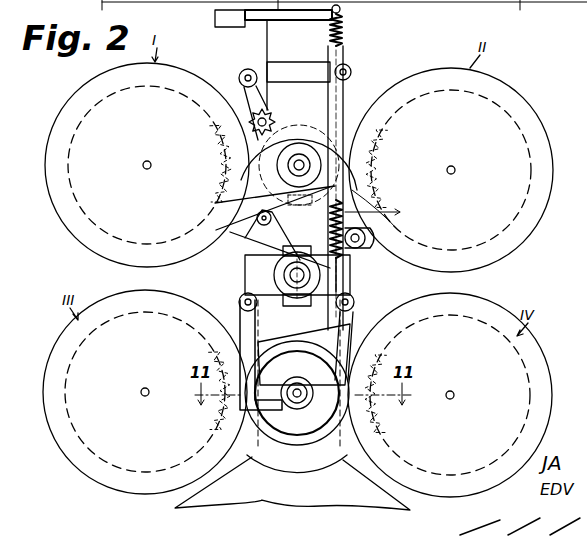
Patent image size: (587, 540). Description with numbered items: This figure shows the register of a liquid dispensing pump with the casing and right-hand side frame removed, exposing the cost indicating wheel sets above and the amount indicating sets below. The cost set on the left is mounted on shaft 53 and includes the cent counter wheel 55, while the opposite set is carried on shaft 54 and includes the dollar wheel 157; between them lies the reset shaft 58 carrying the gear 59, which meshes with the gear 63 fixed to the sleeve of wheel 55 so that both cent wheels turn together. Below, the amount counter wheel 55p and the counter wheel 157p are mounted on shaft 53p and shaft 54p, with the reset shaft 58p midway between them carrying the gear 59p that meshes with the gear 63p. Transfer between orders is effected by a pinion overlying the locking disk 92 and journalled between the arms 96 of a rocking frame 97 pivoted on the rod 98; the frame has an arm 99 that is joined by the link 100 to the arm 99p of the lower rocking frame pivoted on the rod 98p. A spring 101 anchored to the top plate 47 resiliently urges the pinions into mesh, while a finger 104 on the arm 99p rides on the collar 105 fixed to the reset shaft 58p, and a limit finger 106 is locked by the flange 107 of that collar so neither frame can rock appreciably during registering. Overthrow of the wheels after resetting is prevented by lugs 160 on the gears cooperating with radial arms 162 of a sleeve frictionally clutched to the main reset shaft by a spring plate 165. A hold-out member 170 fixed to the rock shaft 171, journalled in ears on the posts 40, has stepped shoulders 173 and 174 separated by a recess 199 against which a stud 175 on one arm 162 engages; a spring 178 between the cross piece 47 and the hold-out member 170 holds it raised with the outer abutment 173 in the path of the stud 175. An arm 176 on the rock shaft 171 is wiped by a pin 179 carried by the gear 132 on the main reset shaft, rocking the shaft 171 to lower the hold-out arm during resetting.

The top plate 47 is at (216, 22).
The post 40 is at (268, 32).
The arm 99 is at (300, 68).
The spring 178 is at (344, 28).
The link 100 is at (350, 80).
The rod 98 is at (244, 70).
The arms of rocking frame 96 is at (240, 90).
The locking disk 92 is at (276, 118).
The gear 59 is at (362, 118).
The counter wheel 55 is at (70, 103).
The shaft 53 is at (143, 165).
The gear 63 is at (212, 144).
The reset shaft 58 is at (300, 163).
The lug 160 is at (223, 168).
The shaft 54 is at (456, 168).
The counter wheel 157 is at (554, 167).
The recess 199 is at (225, 204).
The outer abutment 173 is at (230, 228).
The shoulder 174 is at (292, 215).
The hold-out member 170 is at (385, 207).
The spring 101 is at (385, 218).
The pin 179 is at (388, 232).
The rock shaft 171 is at (372, 252).
The stud 175 is at (258, 226).
The arms 162 is at (262, 260).
The gear 132 is at (245, 279).
The rod 98p is at (240, 300).
The arm 176 is at (350, 255).
The spring plate 165 is at (350, 278).
The arm 99p is at (354, 303).
The limit finger 106 is at (350, 318).
The rocking frame 97 is at (210, 352).
The counter wheel 55p is at (52, 340).
The shaft 53p is at (141, 392).
The gear 63p is at (198, 430).
The collar 105 is at (298, 390).
The shaft 54p is at (455, 392).
The counter wheel 157p is at (545, 365).
The reset shaft 58p is at (297, 410).
The finger 104 is at (262, 432).
The gear 59p is at (262, 470).
The flange 107 is at (315, 455).